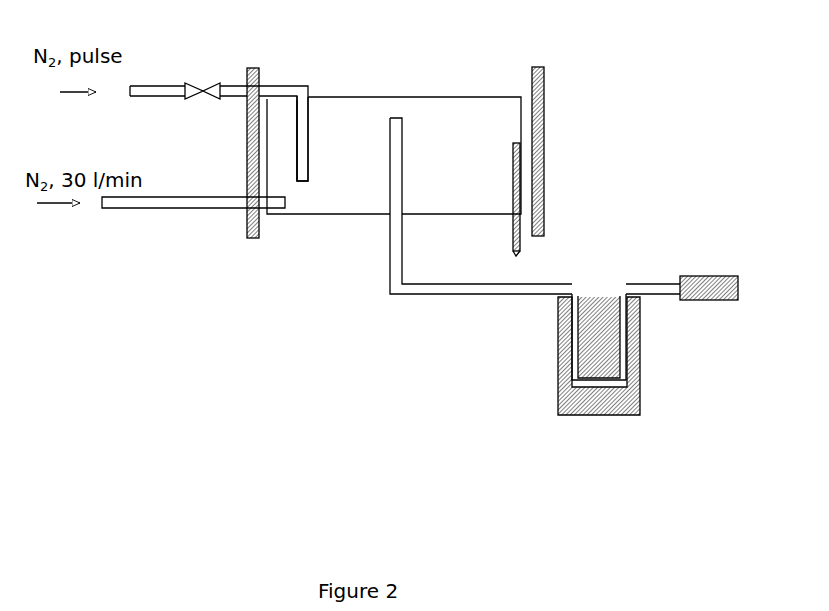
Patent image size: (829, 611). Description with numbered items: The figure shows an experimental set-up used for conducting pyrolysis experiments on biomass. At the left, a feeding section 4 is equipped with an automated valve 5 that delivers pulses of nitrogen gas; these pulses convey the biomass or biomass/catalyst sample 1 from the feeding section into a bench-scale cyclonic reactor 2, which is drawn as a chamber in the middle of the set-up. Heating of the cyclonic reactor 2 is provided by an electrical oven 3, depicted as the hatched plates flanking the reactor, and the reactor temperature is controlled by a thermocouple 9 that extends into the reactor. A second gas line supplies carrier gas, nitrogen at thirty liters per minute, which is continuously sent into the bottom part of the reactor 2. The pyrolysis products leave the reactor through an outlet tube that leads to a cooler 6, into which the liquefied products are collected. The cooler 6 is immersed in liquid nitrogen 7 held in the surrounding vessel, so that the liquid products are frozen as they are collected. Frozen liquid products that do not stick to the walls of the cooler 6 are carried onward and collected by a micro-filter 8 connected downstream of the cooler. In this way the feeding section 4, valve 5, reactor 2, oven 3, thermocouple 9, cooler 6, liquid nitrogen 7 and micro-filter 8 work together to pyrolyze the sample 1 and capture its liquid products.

The biomass or biomass/catalyst sample 1 is at (240, 100).
The bench-scale cyclonic reactor 2 is at (455, 142).
The electrical oven 3 is at (266, 72).
The feeding section 4 is at (318, 90).
The automated valve 5 is at (200, 75).
The cooler 6 is at (610, 297).
The liquid nitrogen 7 is at (560, 411).
The micro-filter 8 is at (724, 264).
The thermocouple 9 is at (520, 255).